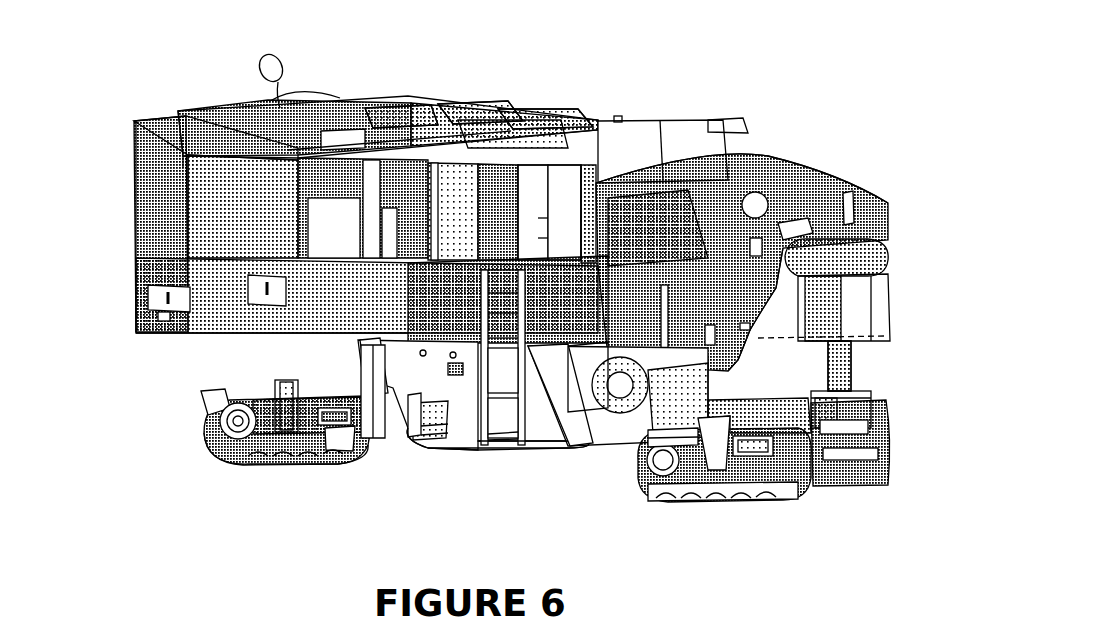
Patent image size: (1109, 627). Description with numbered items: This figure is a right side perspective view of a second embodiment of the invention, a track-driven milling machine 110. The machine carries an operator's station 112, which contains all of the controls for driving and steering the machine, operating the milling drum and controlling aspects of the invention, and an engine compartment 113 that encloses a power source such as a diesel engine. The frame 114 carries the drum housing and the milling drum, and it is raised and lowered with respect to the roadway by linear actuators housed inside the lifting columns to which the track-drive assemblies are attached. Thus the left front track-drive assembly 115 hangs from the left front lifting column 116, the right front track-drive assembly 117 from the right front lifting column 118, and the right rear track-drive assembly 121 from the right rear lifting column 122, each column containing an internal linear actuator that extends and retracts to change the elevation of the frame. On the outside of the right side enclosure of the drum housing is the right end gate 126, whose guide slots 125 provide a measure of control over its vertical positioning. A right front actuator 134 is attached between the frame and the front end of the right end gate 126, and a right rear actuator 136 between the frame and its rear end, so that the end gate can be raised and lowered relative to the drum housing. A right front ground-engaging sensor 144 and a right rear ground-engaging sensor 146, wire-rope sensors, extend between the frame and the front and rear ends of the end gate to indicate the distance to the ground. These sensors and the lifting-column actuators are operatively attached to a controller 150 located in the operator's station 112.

The milling machine 110 is at (512, 250).
The operator's station 112 is at (732, 113).
The engine compartment 113 is at (400, 93).
The frame 114 is at (125, 320).
The left front track-drive assembly 115 is at (847, 480).
The left front lifting column 116 is at (850, 357).
The right front track-drive assembly 117 is at (698, 504).
The right front lifting column 118 is at (733, 497).
The right rear track-drive assembly 121 is at (258, 462).
The right rear lifting column 122 is at (262, 400).
The guide slots 125 is at (397, 437).
The right end gate 126 is at (490, 438).
The right front actuator 134 is at (586, 408).
The right rear actuator 136 is at (345, 347).
The right front ground-engaging sensor 144 is at (570, 427).
The right rear ground-engaging sensor 146 is at (335, 410).
The controller 150 is at (560, 172).